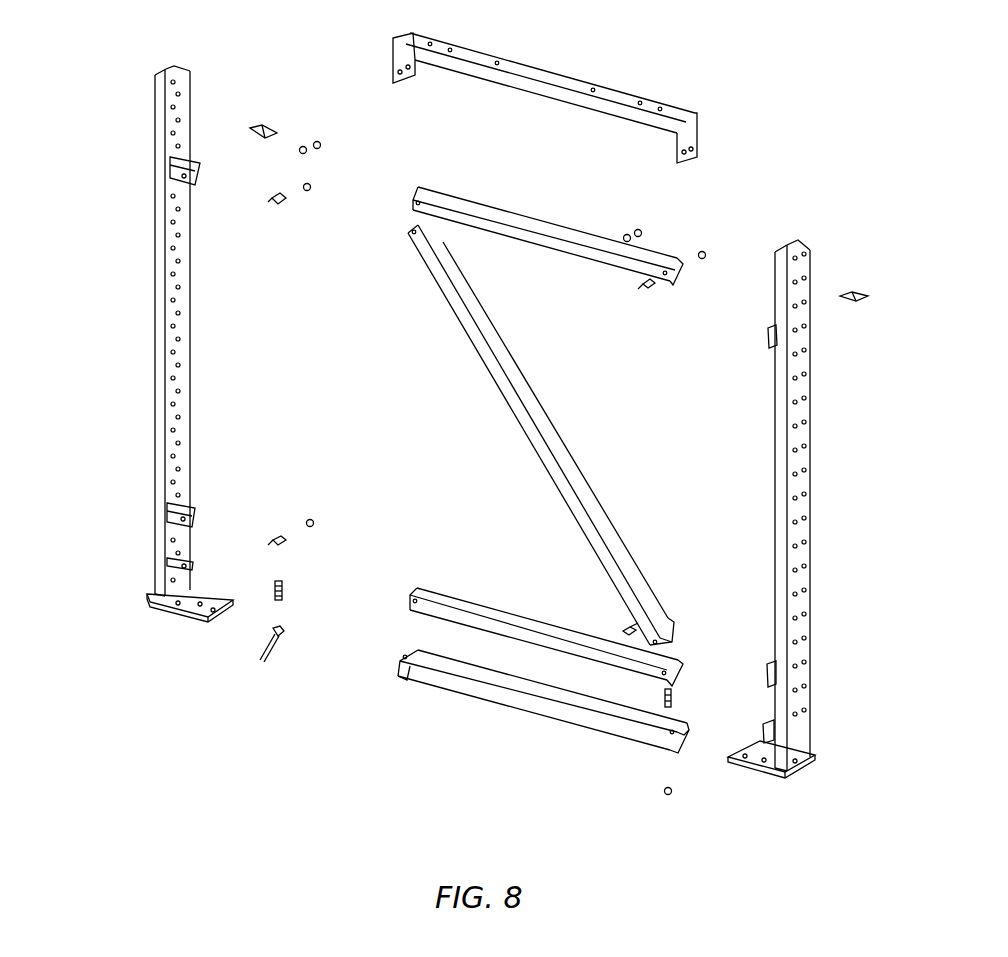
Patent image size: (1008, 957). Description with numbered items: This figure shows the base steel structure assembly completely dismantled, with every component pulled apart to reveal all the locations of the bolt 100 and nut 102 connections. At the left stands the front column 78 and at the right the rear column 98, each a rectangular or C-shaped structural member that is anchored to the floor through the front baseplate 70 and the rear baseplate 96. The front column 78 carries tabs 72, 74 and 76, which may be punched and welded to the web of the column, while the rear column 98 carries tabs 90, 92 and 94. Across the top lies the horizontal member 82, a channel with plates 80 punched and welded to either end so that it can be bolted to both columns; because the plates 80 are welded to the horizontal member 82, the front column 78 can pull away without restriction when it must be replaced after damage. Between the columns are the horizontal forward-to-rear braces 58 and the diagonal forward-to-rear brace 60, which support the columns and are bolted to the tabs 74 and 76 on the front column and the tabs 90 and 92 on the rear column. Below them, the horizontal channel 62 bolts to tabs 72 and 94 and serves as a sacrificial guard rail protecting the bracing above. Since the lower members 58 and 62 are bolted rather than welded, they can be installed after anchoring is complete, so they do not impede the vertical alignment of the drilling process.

The horizontal forward-to-rear brace 58 is at (546, 418).
The diagonal forward-to-rear brace 60 is at (541, 435).
The horizontal channel 62 is at (543, 713).
The front baseplate 70 is at (160, 633).
The tab 72 is at (236, 529).
The tab 74 is at (236, 476).
The tab 76 is at (235, 130).
The front column 78 is at (112, 331).
The plate 80 is at (549, 100).
The horizontal member 82 is at (550, 83).
The tab 90 is at (735, 318).
The tab 92 is at (724, 619).
The tab 94 is at (734, 710).
The rear baseplate 96 is at (790, 791).
The rear column 98 is at (832, 505).
The bolt 100 is at (345, 649).
The nut 102 is at (212, 680).